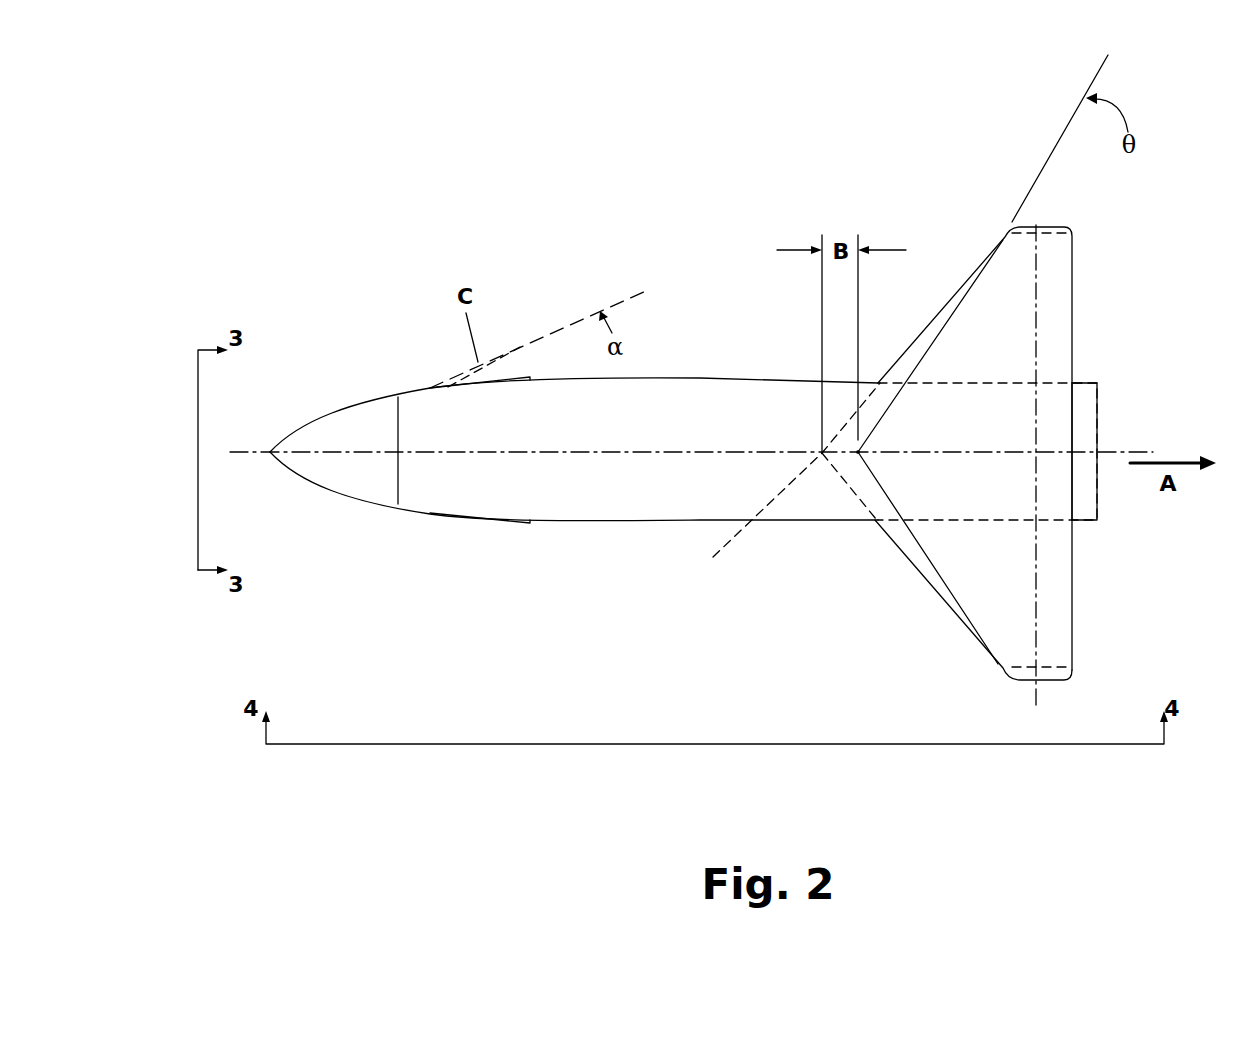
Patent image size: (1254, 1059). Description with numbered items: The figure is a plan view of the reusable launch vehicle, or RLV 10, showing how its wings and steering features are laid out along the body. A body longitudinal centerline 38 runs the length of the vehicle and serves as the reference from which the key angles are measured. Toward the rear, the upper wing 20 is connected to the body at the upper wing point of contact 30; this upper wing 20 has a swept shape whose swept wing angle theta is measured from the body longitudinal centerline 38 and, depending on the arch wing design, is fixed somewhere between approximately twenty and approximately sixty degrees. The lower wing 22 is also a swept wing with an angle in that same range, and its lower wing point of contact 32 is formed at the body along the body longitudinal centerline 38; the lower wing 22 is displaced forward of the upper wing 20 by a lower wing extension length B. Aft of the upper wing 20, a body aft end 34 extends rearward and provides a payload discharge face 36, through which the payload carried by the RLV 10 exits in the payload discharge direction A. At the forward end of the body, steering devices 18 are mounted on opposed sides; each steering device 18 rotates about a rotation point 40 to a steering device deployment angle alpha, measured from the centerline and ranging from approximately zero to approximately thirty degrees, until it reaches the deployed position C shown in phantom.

The reusable launch vehicle 10 is at (1074, 457).
The steering devices 18 is at (457, 387).
The upper wing 20 is at (1045, 340).
The lower wing 22 is at (913, 565).
The upper wing point of contact 30 is at (858, 452).
The lower wing point of contact 32 is at (786, 485).
The body aft end 34 is at (1080, 510).
The payload discharge face 36 is at (1097, 493).
The body longitudinal centerline 38 is at (637, 452).
The rotation point 40 is at (432, 387).